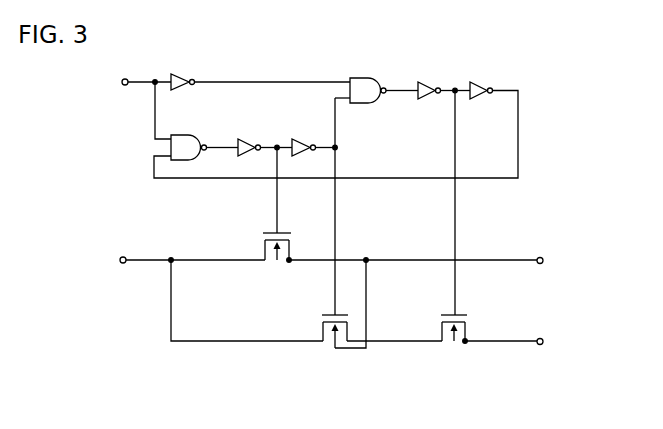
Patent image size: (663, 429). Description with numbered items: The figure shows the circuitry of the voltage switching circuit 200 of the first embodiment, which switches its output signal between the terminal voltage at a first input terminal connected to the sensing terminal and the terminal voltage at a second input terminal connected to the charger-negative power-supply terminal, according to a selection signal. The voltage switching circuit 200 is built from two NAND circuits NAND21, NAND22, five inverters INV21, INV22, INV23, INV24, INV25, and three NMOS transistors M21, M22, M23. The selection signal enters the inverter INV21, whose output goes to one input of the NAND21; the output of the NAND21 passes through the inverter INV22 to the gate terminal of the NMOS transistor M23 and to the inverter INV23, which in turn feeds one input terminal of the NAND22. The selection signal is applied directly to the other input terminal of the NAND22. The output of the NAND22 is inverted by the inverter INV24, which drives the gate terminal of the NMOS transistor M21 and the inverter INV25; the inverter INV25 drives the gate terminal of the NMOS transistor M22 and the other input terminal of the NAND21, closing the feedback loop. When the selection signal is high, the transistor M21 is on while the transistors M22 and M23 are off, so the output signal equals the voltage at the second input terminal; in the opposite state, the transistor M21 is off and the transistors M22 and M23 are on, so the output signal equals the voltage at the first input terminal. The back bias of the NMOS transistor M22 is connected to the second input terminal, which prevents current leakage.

The voltage switching circuit 200 is at (524, 66).
The inverter INV21 is at (182, 73).
The inverter INV22 is at (429, 82).
The inverter INV23 is at (481, 82).
The inverter INV24 is at (249, 138).
The inverter INV25 is at (304, 138).
The NAND circuit NAND21 is at (369, 81).
The NAND circuit NAND22 is at (189, 137).
The NMOS transistor M21 is at (277, 258).
The NMOS transistor M22 is at (334, 343).
The NMOS transistor M23 is at (454, 341).